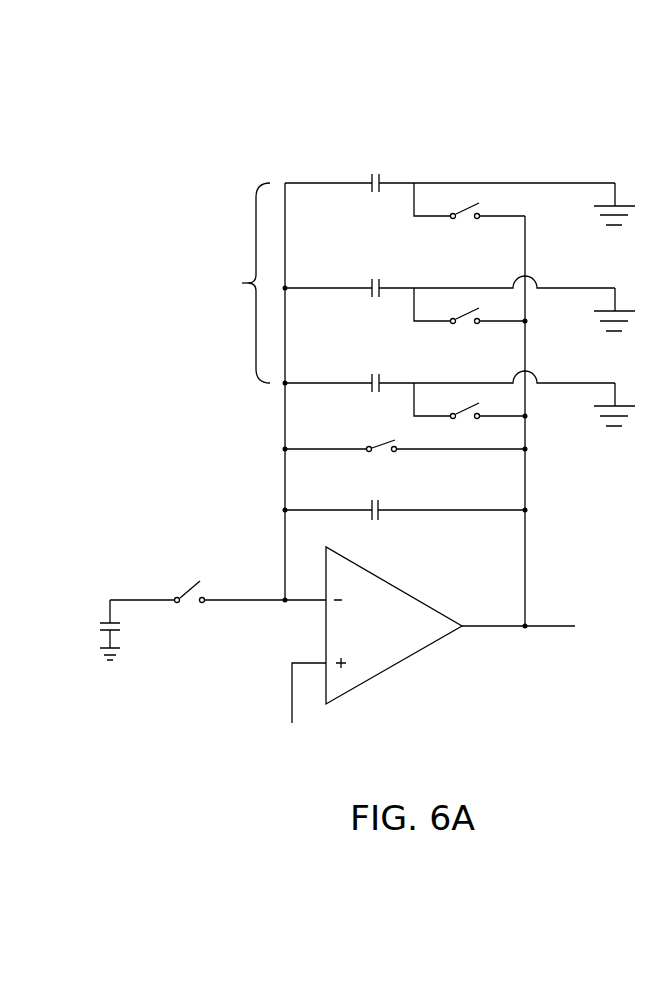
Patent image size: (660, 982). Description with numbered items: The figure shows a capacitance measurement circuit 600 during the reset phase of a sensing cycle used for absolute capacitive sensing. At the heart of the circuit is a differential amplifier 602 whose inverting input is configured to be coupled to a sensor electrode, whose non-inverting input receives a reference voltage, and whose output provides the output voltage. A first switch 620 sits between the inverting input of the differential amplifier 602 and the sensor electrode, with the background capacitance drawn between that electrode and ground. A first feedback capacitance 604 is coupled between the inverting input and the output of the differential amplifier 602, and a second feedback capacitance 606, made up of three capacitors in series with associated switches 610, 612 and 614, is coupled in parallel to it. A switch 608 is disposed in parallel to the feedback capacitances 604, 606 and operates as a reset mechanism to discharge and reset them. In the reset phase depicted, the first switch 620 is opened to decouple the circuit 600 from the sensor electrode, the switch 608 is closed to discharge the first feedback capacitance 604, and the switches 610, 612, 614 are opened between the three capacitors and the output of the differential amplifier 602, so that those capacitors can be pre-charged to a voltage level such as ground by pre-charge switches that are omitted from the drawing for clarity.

The capacitance measurement circuit 600 is at (180, 100).
The differential amplifier 602 is at (390, 665).
The first feedback capacitance 604 is at (360, 490).
The second feedback capacitance 606 is at (416, 291).
The switch 608 is at (428, 470).
The switch 610 is at (455, 397).
The switch 612 is at (455, 302).
The switch 614 is at (455, 197).
The first switch 620 is at (176, 571).